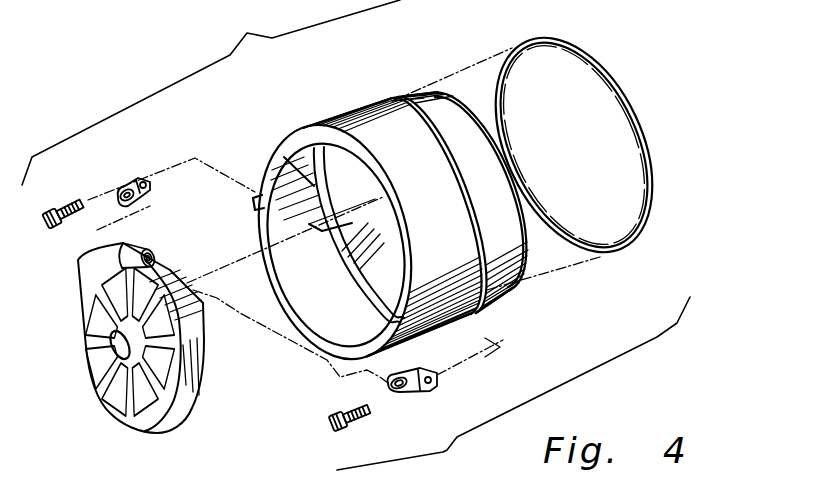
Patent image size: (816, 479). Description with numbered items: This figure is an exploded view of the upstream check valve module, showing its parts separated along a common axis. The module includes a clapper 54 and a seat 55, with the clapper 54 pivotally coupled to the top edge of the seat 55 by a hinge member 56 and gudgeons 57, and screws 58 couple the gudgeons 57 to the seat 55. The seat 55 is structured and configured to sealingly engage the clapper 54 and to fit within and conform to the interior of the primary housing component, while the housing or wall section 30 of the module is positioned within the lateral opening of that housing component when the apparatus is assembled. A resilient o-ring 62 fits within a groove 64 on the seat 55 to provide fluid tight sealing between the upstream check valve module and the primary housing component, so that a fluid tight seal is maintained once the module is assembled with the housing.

The housing or wall section 30 is at (455, 262).
The clapper 54 is at (99, 384).
The seat 55 is at (517, 265).
The hinge member 56 is at (118, 247).
The gudgeons 57 is at (140, 175).
The screws 58 is at (68, 204).
The resilient o-ring 62 is at (577, 50).
The groove 64 is at (480, 213).